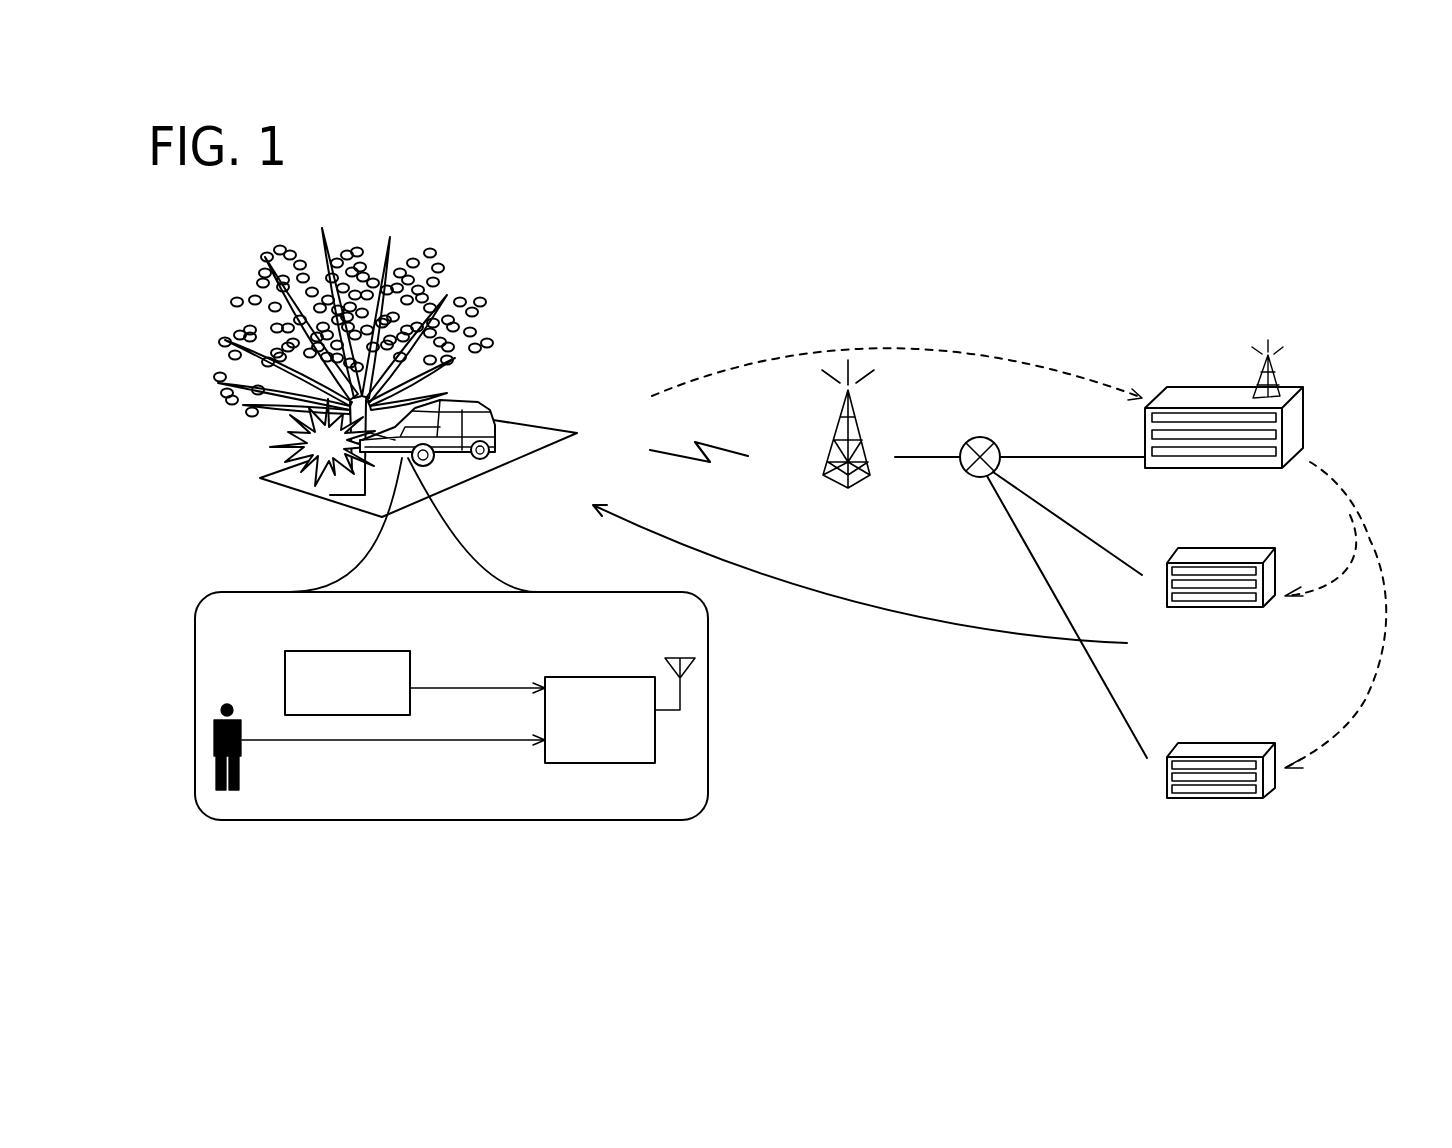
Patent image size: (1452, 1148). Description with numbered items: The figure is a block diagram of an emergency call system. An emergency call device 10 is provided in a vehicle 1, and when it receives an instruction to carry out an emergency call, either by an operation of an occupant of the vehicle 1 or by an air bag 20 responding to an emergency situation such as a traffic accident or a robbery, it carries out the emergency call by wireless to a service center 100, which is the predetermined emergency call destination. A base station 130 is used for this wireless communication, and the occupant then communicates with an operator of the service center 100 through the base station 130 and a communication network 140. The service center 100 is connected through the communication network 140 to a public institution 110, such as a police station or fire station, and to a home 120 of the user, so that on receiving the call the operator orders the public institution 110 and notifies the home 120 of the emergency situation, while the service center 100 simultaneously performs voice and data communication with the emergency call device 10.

The vehicle 1 is at (470, 400).
The emergency call device 10 is at (595, 763).
The air bag 20 is at (305, 651).
The service center 100 is at (1145, 462).
The public institution 110 is at (1175, 607).
The home 120 is at (1195, 798).
The base station 130 is at (823, 478).
The communication network 140 is at (980, 437).